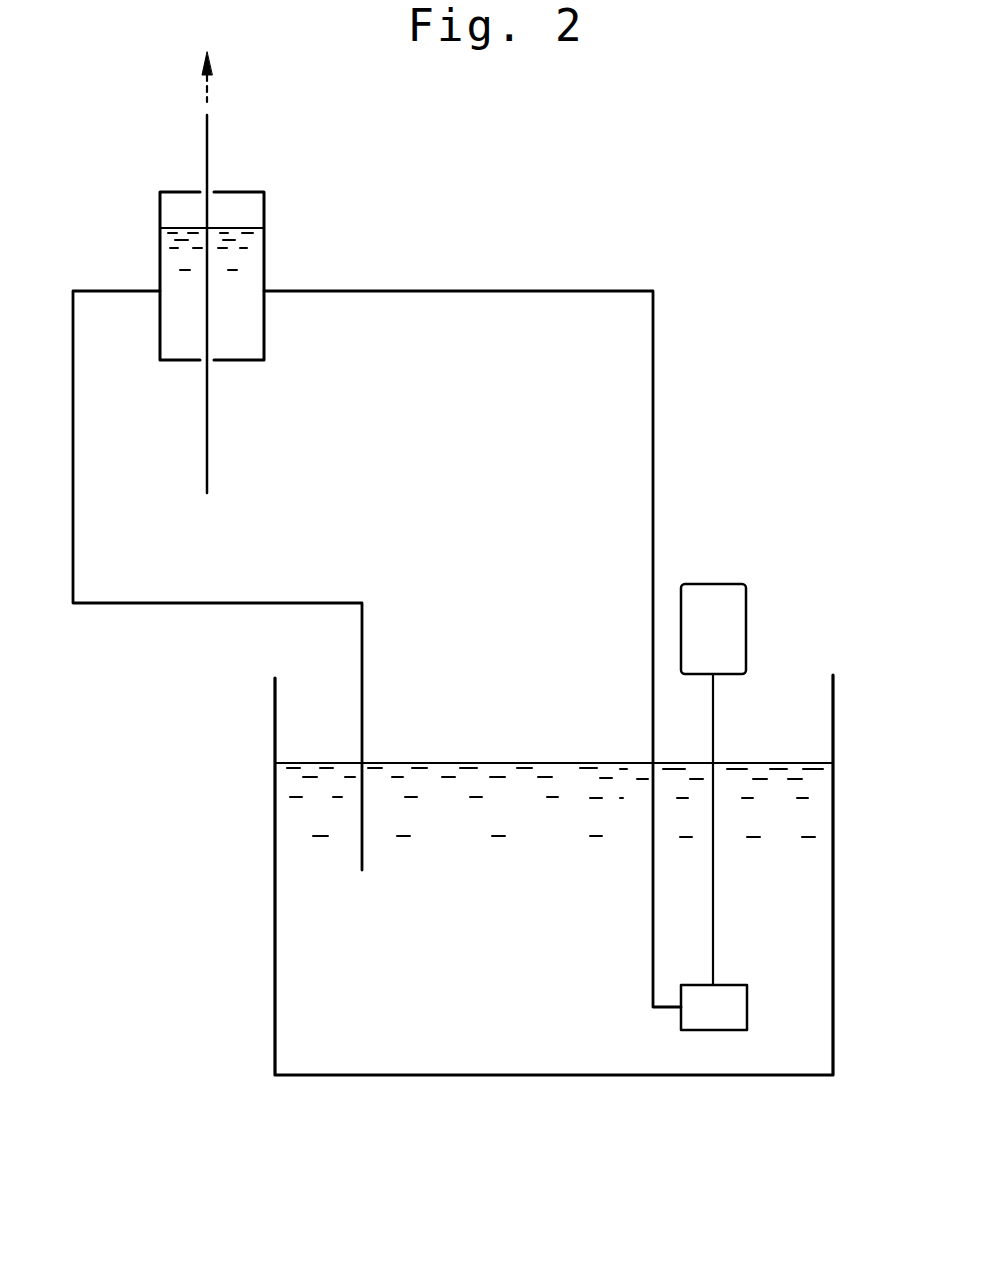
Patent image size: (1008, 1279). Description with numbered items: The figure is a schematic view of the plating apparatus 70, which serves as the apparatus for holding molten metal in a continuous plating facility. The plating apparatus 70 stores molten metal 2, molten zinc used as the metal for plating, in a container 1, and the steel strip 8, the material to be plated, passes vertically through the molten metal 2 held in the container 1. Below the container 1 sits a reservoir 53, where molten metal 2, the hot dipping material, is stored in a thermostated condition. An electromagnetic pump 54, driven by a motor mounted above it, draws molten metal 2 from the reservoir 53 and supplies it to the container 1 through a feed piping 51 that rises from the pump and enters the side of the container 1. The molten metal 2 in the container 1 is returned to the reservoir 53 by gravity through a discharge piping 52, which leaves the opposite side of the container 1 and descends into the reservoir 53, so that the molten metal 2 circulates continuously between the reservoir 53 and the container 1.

The container 1 is at (264, 253).
The molten metal 2 is at (165, 258).
The steel strip 8 is at (207, 157).
The feed piping 51 is at (653, 349).
The discharge piping 52 is at (165, 603).
The reservoir 53 is at (837, 797).
The electromagnetic pump 54 is at (748, 1007).
The plating apparatus 70 is at (278, 197).